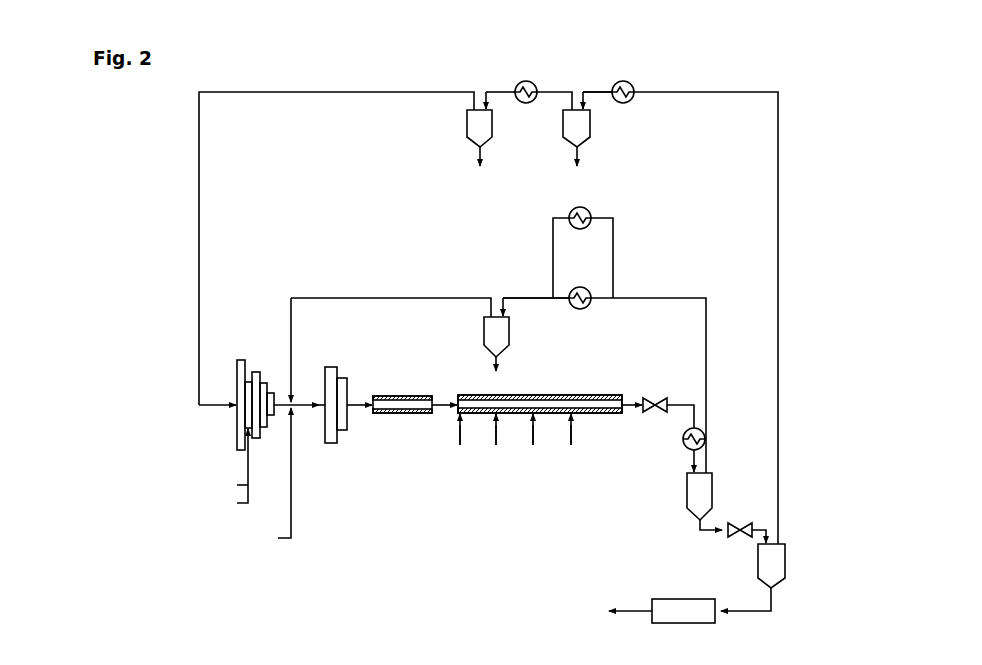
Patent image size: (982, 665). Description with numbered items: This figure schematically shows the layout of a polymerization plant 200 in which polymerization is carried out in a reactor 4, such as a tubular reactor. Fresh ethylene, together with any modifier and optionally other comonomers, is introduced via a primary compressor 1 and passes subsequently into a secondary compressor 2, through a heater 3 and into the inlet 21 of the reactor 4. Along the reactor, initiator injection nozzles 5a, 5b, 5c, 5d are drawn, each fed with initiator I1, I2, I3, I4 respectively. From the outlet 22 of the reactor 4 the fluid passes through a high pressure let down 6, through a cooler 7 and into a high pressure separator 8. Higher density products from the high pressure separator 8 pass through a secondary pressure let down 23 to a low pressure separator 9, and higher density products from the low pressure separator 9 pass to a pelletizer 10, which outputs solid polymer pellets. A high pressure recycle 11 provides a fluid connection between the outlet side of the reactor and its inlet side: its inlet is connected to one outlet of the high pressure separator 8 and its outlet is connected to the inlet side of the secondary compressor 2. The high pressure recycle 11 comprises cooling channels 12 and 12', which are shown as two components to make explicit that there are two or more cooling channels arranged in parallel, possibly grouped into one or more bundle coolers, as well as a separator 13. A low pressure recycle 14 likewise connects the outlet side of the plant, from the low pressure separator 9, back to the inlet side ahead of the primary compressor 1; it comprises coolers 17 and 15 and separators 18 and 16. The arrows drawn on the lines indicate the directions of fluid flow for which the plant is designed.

The plant 200 is at (258, 51).
The primary compressor 1 is at (248, 371).
The secondary compressor 2 is at (342, 377).
The heater 3 is at (417, 395).
The reactor 4 is at (605, 394).
The initiator injection nozzle 5a is at (463, 414).
The initiator injection nozzle 5b is at (500, 414).
The initiator injection nozzle 5c is at (537, 414).
The initiator injection nozzle 5d is at (575, 414).
The initiator I1 is at (459, 446).
The initiator I2 is at (497, 446).
The initiator I3 is at (533, 446).
The initiator I4 is at (571, 446).
The high pressure let down 6 is at (655, 397).
The cooler 7 is at (682, 439).
The high pressure separator 8 is at (686, 490).
The low pressure separator 9 is at (786, 562).
The pelletizer 10 is at (681, 605).
The high pressure recycle 11 is at (545, 299).
The cooling channel 12 is at (580, 318).
The cooling channel 12' is at (581, 237).
The separator 13 is at (483, 333).
The low pressure recycle 14 is at (597, 91).
The cooler 15 is at (623, 80).
The separator 16 is at (591, 128).
The cooler 17 is at (526, 80).
The separator 18 is at (493, 128).
The reactor inlet 21 is at (459, 394).
The reactor outlet 22 is at (622, 414).
The pressure let down 23 is at (740, 522).